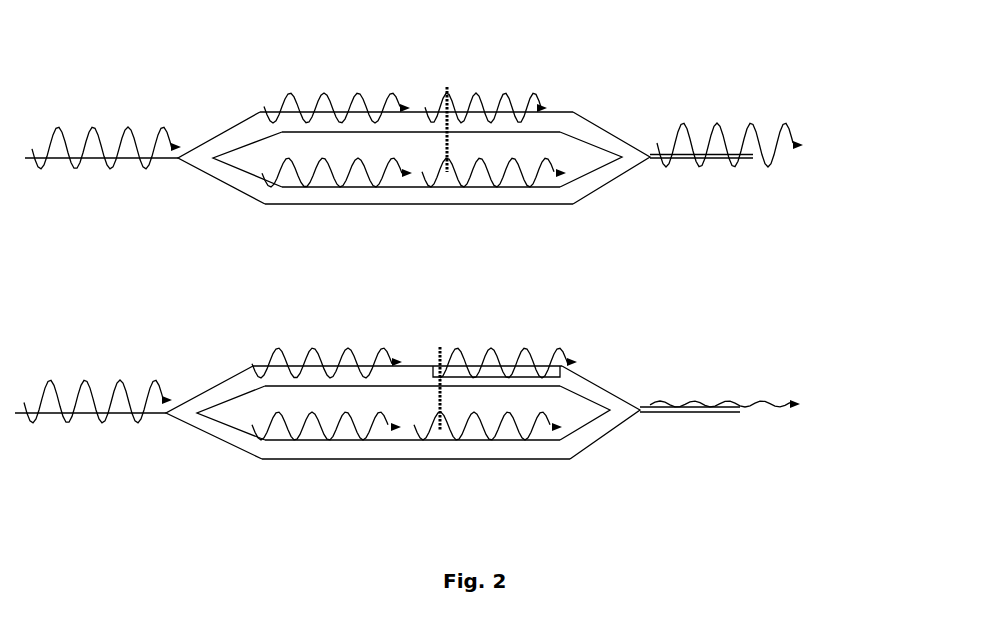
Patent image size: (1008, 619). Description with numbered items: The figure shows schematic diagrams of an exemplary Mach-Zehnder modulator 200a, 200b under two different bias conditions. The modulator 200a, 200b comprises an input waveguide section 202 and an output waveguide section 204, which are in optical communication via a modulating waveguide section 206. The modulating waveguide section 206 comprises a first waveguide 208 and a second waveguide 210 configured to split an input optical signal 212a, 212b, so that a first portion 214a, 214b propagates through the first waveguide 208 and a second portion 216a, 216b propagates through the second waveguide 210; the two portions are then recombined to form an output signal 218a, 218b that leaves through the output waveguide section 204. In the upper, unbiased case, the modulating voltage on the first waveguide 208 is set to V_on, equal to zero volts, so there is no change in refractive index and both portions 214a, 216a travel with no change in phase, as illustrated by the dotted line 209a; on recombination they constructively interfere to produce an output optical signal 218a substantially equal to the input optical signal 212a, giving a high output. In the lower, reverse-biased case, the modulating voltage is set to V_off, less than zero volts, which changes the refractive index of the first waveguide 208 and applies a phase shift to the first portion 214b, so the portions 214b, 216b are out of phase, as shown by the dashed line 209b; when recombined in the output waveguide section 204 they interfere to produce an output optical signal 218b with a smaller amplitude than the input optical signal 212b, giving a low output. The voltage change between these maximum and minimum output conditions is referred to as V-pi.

The MZ modulator 200a is at (447, 149).
The MZ modulator 200b is at (448, 425).
The input waveguide section 202 is at (96, 155).
The output waveguide section 204 is at (679, 133).
The modulating waveguide section 206 is at (282, 205).
The first waveguide 208 is at (355, 115).
The second waveguide 210 is at (522, 183).
The dotted line 209a is at (452, 90).
The dashed line 209b is at (448, 420).
The input optical signal 212a is at (122, 127).
The input optical signal 212b is at (104, 422).
The first portion of the input signal 214a is at (283, 95).
The first portion of the input signal 214b is at (386, 343).
The second portion of the input signal 216a is at (318, 174).
The second portion of the input signal 216b is at (340, 429).
The output optical signal 218a is at (768, 169).
The output optical signal 218b is at (771, 414).